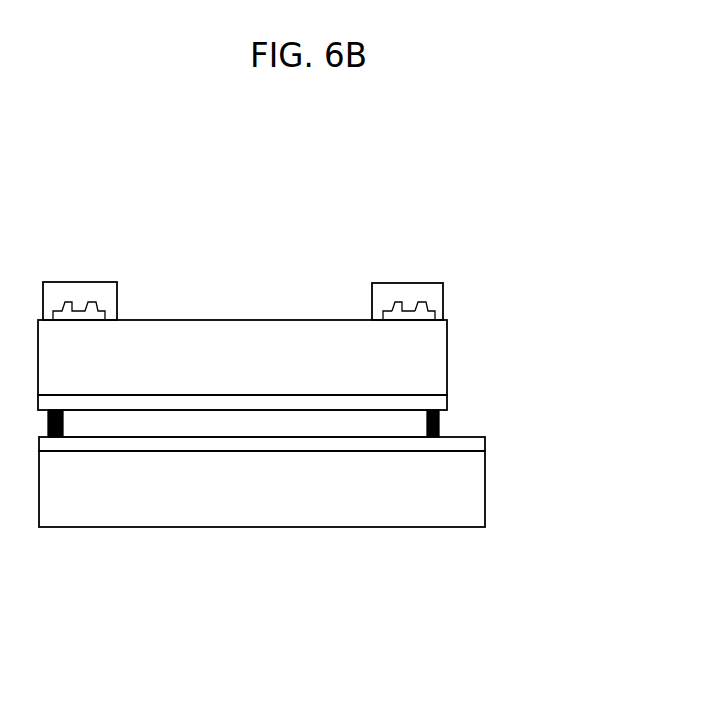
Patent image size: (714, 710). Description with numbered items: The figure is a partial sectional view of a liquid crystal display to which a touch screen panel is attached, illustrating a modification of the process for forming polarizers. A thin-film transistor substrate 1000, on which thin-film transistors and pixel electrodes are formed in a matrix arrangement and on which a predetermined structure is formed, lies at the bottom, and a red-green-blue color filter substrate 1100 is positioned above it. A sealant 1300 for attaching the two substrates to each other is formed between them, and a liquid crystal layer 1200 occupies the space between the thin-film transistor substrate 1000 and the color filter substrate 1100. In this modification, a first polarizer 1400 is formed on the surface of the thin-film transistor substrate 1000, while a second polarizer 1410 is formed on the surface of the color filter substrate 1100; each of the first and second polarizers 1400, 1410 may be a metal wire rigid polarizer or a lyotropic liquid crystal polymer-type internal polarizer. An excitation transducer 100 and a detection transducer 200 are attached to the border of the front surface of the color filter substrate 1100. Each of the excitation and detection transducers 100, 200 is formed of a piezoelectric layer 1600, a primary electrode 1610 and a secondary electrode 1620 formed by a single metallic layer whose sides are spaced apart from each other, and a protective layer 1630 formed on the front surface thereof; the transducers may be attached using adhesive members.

The excitation transducer 100 is at (53, 238).
The detection transducer 200 is at (406, 236).
The thin-film transistor substrate 1000 is at (475, 513).
The color filter substrate 1100 is at (445, 338).
The liquid crystal layer 1200 is at (343, 427).
The sealant 1300 is at (439, 425).
The first polarizer 1400 is at (475, 445).
The second polarizer 1410 is at (445, 400).
The piezoelectric layer 1600 is at (402, 312).
The primary electrode 1610 is at (385, 315).
The secondary electrode 1620 is at (420, 313).
The protective layer 1630 is at (442, 302).